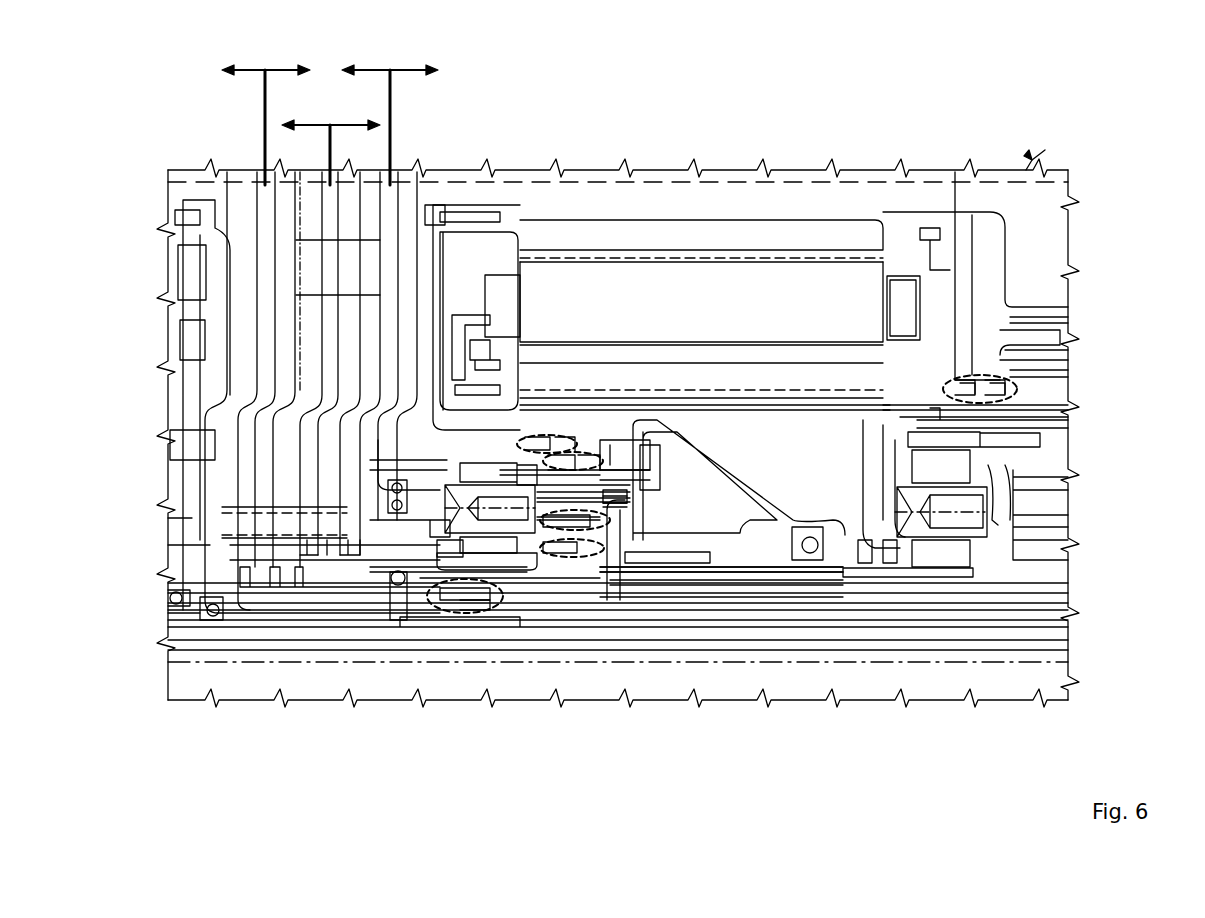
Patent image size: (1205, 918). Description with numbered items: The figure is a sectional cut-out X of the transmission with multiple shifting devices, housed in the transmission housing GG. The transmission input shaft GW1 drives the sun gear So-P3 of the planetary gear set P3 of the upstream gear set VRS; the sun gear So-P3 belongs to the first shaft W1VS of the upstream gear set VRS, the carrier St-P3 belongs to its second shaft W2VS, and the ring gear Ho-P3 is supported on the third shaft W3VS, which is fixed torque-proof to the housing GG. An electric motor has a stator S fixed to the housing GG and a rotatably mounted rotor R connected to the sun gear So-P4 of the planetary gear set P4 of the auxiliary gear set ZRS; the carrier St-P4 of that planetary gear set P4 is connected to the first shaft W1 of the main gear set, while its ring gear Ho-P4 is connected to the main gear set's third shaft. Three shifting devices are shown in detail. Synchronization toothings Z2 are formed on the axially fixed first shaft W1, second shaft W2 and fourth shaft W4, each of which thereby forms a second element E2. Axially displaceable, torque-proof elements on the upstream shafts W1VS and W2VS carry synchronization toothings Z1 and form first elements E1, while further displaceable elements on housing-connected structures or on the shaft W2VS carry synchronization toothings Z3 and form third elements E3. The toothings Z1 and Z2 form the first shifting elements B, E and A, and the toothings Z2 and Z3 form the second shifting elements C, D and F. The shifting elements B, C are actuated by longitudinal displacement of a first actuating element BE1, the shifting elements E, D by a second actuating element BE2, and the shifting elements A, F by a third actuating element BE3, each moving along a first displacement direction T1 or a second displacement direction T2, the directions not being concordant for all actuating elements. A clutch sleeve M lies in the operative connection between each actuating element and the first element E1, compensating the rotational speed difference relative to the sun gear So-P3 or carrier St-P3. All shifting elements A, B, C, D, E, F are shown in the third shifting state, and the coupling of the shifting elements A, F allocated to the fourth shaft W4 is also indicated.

The first displacement direction T1 is at (330, 112).
The second displacement direction T2 is at (330, 112).
The first actuating element BE1 is at (265, 193).
The second actuating element BE2 is at (261, 364).
The third actuating element BE3 is at (261, 364).
The third shaft of the upstream gear set W3VS is at (480, 440).
The ring gear of the planetary gear set P3 Ho-P3 is at (565, 557).
The carrier of the planetary gear set P3 St-P3 is at (565, 557).
The sun gear of the planetary gear set P3 So-P3 is at (565, 557).
The ring gear of the planetary gear set P4 Ho-P4 is at (669, 605).
The carrier of the planetary gear set P4 St-P4 is at (669, 605).
The sun gear of the planetary gear set P4 So-P4 is at (669, 605).
The planetary gear set P3 is at (565, 557).
The planetary gear set P4 is at (1040, 420).
The upstream gear set VRS is at (565, 557).
The auxiliary gear set ZRS is at (669, 605).
The synchronization toothing Z1 is at (601, 460).
The first element of the shifting device E1 is at (618, 470).
The synchronization toothing Z2 is at (769, 448).
The second element of the shifting device E2 is at (560, 458).
The synchronization toothing Z3 is at (792, 460).
The third element of the shifting device E3 is at (545, 437).
The first shifting element A is at (455, 612).
The first shifting element B is at (590, 462).
The second shifting element C is at (556, 440).
The second shifting element D is at (615, 505).
The first shifting element E is at (567, 525).
The second shifting element F is at (1000, 375).
The rotor R is at (745, 355).
The stator S is at (822, 290).
The clutch sleeve M is at (413, 486).
The cut-out X is at (1032, 158).
The transmission housing GG is at (1003, 245).
The transmission input shaft GW1 is at (200, 640).
The first shaft of the main gear set W1 is at (975, 600).
The second shaft of the main gear set W2 is at (1010, 615).
The fourth shaft of the main gear set W4 is at (669, 605).
The first shaft of the upstream gear set W1VS is at (565, 557).
The second shaft of the upstream gear set W2VS is at (617, 496).